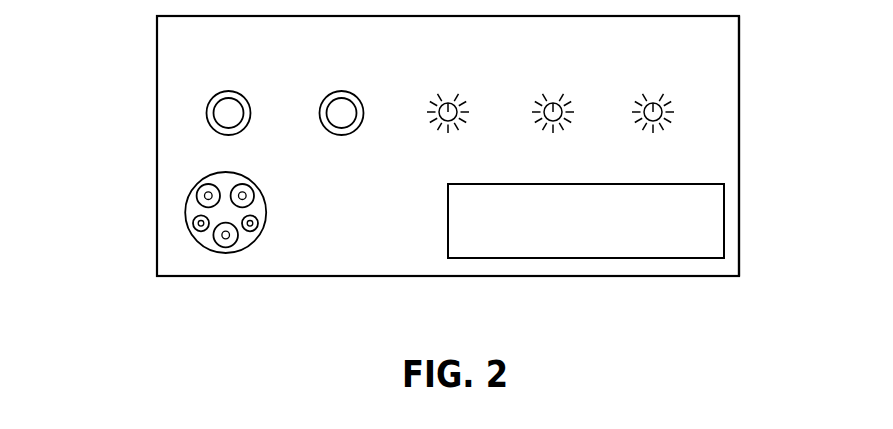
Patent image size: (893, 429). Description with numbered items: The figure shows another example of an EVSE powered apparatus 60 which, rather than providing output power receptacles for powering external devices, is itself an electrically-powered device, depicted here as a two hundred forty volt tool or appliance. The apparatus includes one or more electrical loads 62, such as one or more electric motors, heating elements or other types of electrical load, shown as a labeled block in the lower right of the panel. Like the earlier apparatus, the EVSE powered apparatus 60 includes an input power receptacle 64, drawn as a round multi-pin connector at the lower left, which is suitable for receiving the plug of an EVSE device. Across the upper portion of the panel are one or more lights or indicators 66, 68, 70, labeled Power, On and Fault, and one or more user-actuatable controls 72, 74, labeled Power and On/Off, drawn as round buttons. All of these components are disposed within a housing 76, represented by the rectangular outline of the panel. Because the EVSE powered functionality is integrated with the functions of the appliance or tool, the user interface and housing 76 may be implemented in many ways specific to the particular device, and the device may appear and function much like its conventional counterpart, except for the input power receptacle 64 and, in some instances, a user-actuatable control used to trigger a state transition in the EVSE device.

The EVSE powered apparatus 60 is at (118, 92).
The electrical load 62 is at (724, 227).
The input power receptacle 64 is at (186, 217).
The light or indicator 66 is at (448, 103).
The light or indicator 68 is at (553, 103).
The light or indicator 70 is at (653, 103).
The user-actuatable control 72 is at (248, 110).
The user-actuatable control 74 is at (362, 110).
The housing 76 is at (740, 80).